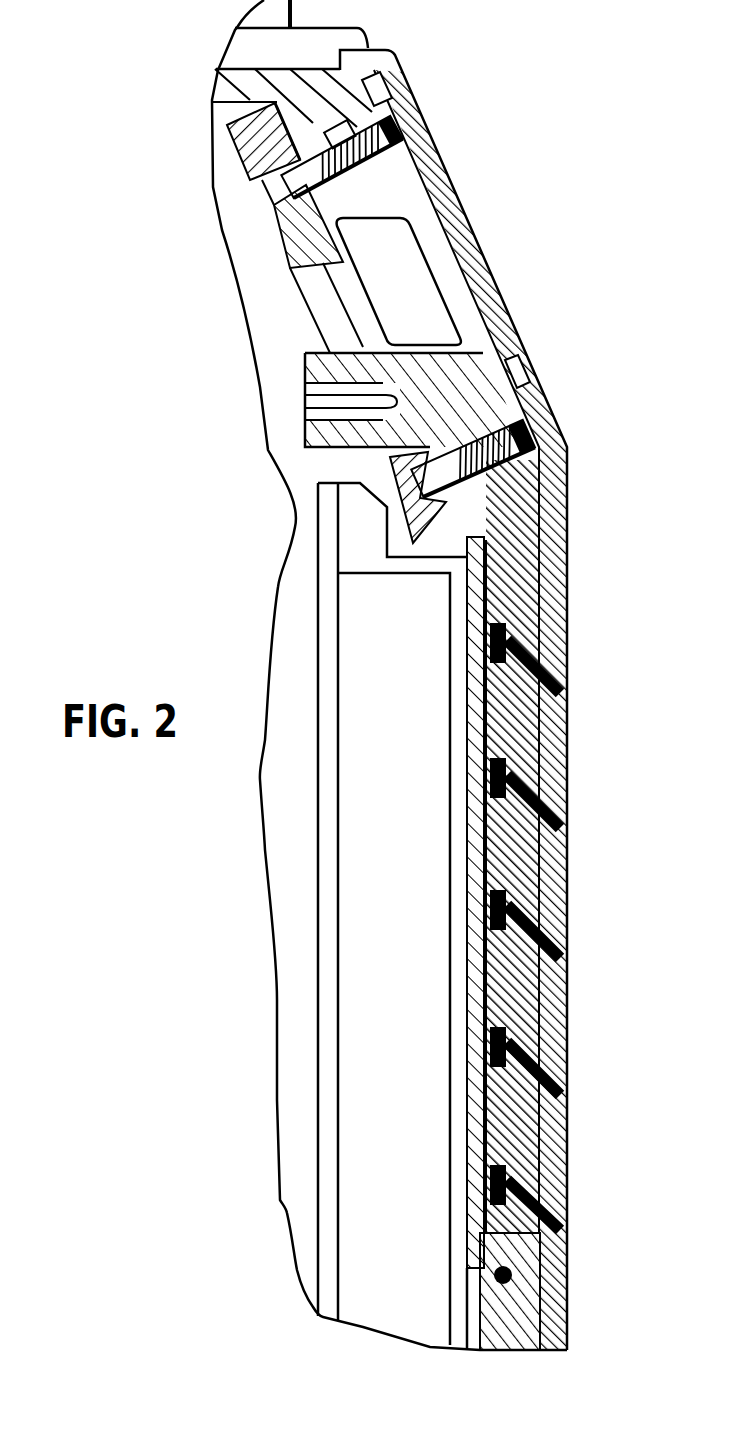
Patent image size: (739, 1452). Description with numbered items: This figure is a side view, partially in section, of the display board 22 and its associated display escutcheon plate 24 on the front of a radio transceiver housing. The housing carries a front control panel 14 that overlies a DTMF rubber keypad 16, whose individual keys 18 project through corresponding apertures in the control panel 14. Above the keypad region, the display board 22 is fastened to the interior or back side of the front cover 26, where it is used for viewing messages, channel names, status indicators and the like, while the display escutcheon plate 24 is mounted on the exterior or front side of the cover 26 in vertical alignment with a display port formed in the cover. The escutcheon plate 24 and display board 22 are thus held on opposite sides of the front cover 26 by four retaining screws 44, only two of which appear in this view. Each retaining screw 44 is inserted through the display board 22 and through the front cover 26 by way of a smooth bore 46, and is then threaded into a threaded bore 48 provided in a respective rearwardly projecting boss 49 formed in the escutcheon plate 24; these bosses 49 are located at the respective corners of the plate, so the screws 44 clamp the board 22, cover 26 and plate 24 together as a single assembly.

The front control panel 14 is at (570, 552).
The DTMF rubber keypad 16 is at (528, 963).
The individual keys 18 is at (567, 880).
The display board 22 is at (293, 258).
The display escutcheon plate 24 is at (462, 245).
The front cover 26 is at (460, 365).
The retaining screws 44 is at (418, 136).
The smooth bores 46 is at (310, 140).
The threaded bores 48 is at (408, 150).
The rearwardly projecting bosses 49 is at (357, 110).